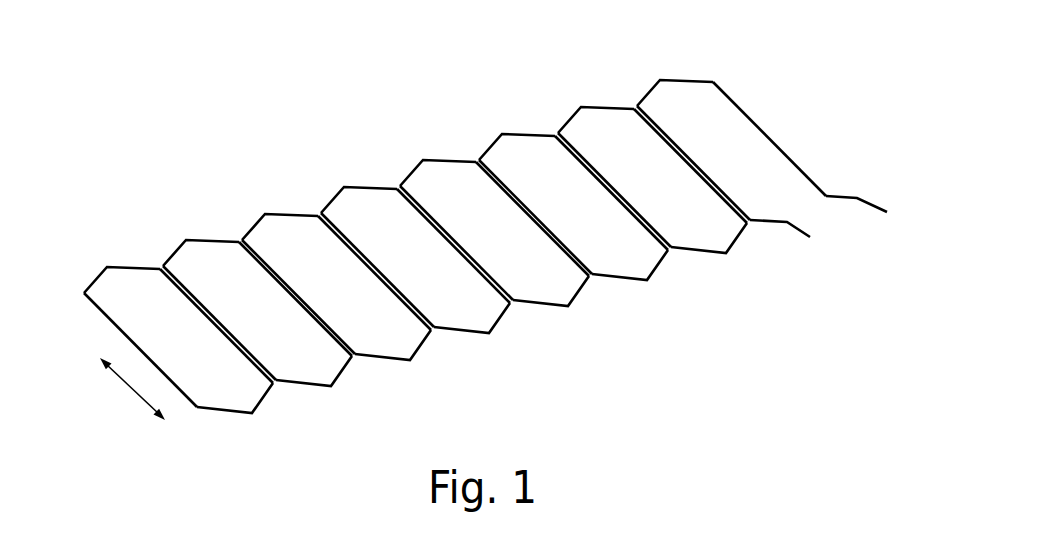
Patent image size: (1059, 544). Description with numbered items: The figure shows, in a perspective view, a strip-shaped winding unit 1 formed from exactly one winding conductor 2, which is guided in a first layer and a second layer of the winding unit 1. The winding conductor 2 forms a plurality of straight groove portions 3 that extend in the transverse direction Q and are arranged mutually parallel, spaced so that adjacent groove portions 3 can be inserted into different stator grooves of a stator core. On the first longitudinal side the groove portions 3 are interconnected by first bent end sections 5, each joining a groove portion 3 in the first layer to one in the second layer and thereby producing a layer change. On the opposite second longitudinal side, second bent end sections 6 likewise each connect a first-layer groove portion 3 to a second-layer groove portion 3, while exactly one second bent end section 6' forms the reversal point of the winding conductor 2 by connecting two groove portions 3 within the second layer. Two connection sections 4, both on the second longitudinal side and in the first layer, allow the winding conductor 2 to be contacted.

The winding unit 1 is at (469, 243).
The winding conductor 2 is at (703, 80).
The groove portions 3 is at (100, 309).
The connection sections 4 is at (782, 225).
The first bent end sections 5 is at (387, 154).
The second bent end sections 6 is at (472, 346).
The second bent end section 6' is at (235, 426).
The transverse direction Q is at (127, 387).